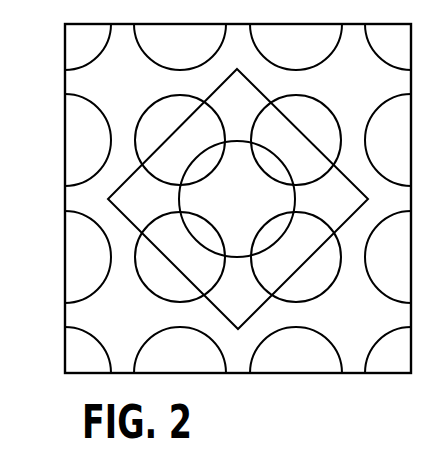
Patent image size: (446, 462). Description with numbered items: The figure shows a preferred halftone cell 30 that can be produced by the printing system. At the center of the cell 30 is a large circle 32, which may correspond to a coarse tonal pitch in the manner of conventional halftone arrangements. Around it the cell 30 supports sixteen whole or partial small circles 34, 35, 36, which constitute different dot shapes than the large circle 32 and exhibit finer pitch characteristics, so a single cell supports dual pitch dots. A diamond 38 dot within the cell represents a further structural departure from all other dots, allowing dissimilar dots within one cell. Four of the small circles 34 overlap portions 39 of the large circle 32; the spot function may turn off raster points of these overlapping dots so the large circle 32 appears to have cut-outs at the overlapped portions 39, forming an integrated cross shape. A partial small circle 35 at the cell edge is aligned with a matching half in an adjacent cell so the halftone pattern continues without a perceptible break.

The halftone cell 30 is at (38, 42).
The large circle 32 is at (179, 198).
The small circle 34 is at (134, 139).
The partial small circle 35 is at (315, 68).
The small circle 36 is at (86, 68).
The diamond 38 is at (369, 199).
The overlapped portion 39 is at (273, 232).